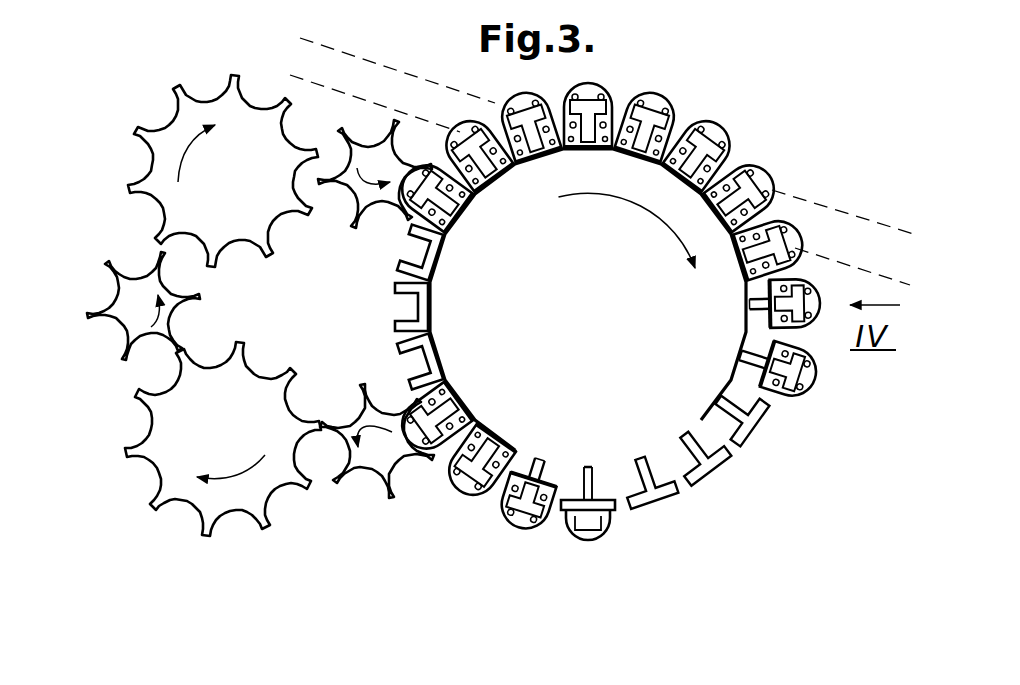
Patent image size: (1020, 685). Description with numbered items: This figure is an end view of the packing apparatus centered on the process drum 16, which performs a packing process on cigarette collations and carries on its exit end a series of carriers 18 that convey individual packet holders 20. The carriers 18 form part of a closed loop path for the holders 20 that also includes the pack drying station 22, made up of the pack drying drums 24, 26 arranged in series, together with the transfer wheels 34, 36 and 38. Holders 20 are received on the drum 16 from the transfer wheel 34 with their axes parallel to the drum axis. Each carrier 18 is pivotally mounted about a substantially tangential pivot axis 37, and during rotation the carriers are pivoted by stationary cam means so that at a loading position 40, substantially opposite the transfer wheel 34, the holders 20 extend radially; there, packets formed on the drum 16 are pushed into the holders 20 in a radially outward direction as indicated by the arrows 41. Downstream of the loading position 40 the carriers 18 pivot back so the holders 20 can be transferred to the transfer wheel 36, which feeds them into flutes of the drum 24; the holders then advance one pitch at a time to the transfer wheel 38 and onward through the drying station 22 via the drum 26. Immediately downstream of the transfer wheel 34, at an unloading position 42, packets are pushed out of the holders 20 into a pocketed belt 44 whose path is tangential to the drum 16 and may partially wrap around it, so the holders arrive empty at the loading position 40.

The process drum 16 is at (585, 334).
The carriers 18 is at (496, 104).
The packet holders 20 is at (456, 140).
The pack drying station 22 is at (124, 226).
The pack drying drum 24 is at (212, 500).
The pack drying drum 26 is at (252, 130).
The transfer wheel 34 is at (383, 200).
The transfer wheel 36 is at (380, 460).
The pivot axis 37 is at (748, 348).
The transfer wheel 38 is at (132, 318).
The loading position 40 is at (724, 488).
The arrows 41 is at (678, 457).
The unloading position 42 is at (704, 108).
The pocketed belt 44 is at (840, 200).